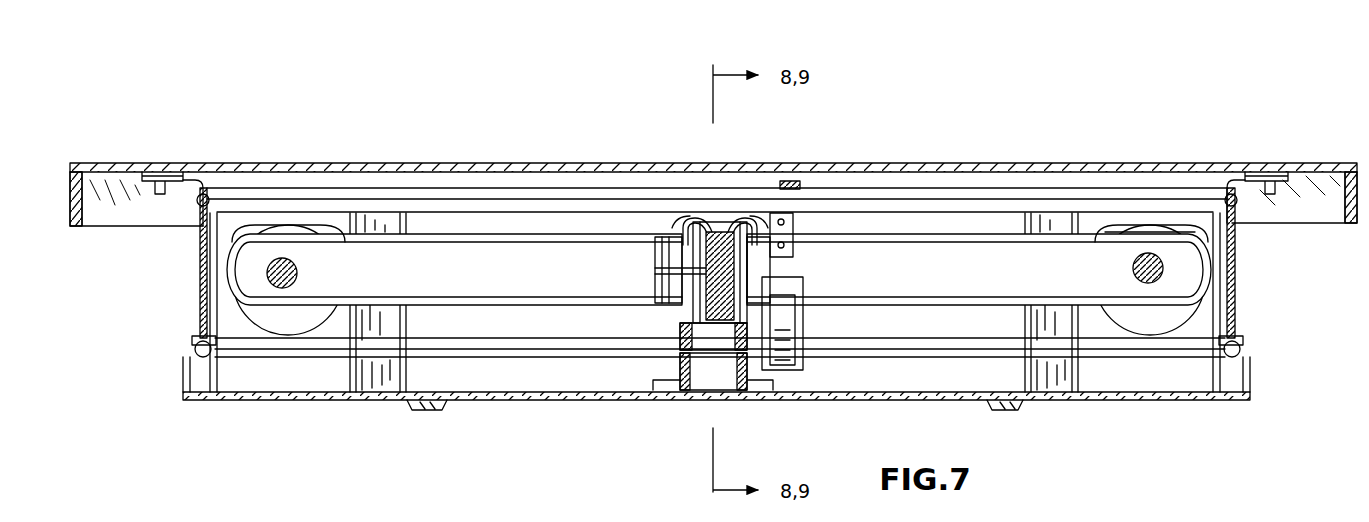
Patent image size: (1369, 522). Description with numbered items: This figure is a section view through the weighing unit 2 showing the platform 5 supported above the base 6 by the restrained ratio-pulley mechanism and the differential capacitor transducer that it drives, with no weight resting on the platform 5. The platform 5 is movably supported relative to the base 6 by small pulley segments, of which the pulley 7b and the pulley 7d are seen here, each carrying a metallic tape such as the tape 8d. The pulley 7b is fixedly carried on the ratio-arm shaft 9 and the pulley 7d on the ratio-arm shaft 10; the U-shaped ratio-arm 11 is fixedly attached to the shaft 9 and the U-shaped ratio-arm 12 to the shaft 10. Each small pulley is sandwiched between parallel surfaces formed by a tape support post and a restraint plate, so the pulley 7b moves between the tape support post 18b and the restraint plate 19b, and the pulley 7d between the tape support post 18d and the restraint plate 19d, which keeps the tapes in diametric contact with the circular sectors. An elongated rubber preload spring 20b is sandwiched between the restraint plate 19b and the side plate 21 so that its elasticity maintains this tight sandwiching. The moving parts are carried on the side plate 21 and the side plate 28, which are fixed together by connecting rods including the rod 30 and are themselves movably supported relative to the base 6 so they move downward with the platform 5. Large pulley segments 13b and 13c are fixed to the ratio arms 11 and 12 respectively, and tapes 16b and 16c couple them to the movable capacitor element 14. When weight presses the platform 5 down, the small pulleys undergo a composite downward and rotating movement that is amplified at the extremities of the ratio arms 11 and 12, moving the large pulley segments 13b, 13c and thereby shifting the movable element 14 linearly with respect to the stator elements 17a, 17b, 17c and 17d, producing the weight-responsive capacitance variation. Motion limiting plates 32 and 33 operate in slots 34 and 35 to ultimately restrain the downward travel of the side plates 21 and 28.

The weighing unit 2 is at (450, 146).
The platform 5 is at (347, 162).
The base 6 is at (561, 397).
The small pulley segment 7b is at (290, 326).
The small pulley segment 7d is at (1146, 326).
The metallic tape 8d is at (1185, 230).
The ratio-arm shaft 9 is at (298, 273).
The ratio-arm shaft 10 is at (1148, 252).
The ratio-arm 11 is at (513, 270).
The ratio-arm 12 is at (990, 255).
The large pulley segment 13b is at (684, 226).
The large pulley segment 13c is at (758, 222).
The movable capacitor element 14 is at (720, 272).
The tape 16b is at (700, 228).
The tape 16c is at (738, 218).
The stator element 17a is at (694, 263).
The stator element 17b is at (700, 310).
The stator element 17c is at (786, 258).
The stator element 17d is at (804, 330).
The tape support post 18b is at (268, 226).
The tape support post 18d is at (1048, 393).
The restraint plate 19b is at (250, 230).
The restraint plate 19d is at (1205, 230).
The rubber preload spring 20b is at (200, 240).
The side plate 21 is at (212, 275).
The side plate 28 is at (1236, 260).
The connecting rod 30 is at (488, 352).
The motion limiting plate 32 is at (196, 351).
The motion limiting plate 33 is at (1242, 343).
The slot 34 is at (192, 340).
The slot 35 is at (1237, 333).